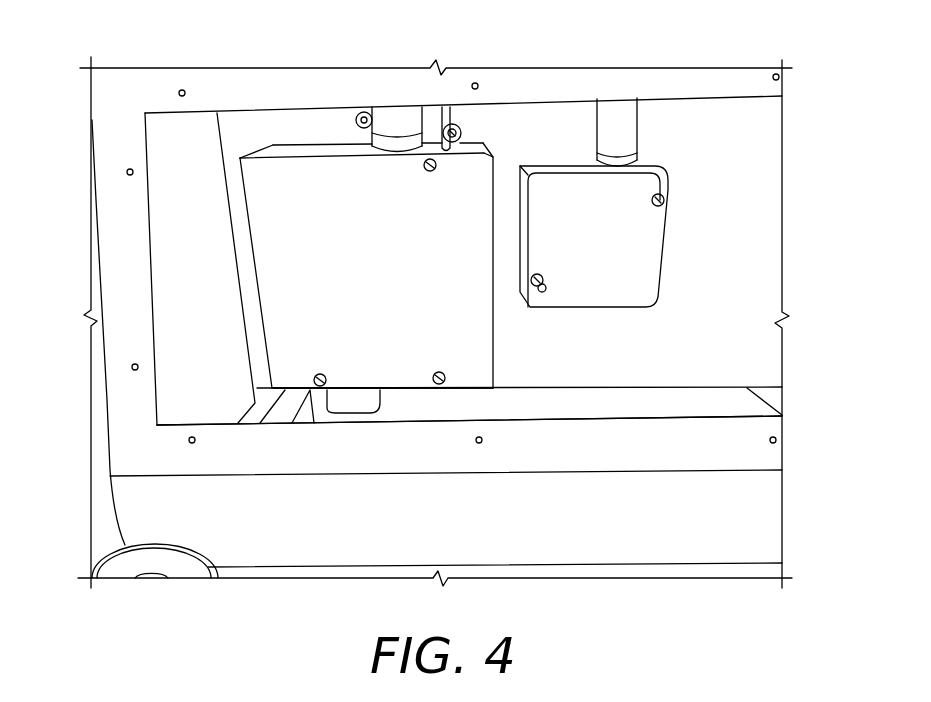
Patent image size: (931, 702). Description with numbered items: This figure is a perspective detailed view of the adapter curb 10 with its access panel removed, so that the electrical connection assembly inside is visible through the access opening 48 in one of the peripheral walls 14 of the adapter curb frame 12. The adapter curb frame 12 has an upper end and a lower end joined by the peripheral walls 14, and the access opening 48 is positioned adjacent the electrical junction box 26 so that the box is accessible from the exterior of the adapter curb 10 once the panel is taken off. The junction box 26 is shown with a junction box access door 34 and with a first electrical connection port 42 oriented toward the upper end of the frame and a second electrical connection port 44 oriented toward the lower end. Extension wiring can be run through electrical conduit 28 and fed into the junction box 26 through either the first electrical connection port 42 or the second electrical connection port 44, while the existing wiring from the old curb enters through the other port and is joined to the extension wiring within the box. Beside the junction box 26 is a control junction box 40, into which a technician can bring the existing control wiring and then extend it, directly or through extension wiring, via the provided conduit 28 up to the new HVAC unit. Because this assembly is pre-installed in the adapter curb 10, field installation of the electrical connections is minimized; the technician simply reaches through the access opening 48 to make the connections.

The adapter curb 10 is at (830, 91).
The adapter curb frame 12 is at (740, 522).
The peripheral walls 14 is at (740, 458).
The electrical junction box 26 is at (277, 262).
The conduit 28 is at (617, 117).
The junction box access door 34 is at (282, 328).
The control junction box 40 is at (553, 193).
The first electrical connection port 42 is at (397, 115).
The second electrical connection port 44 is at (342, 402).
The access opening 48 is at (168, 163).